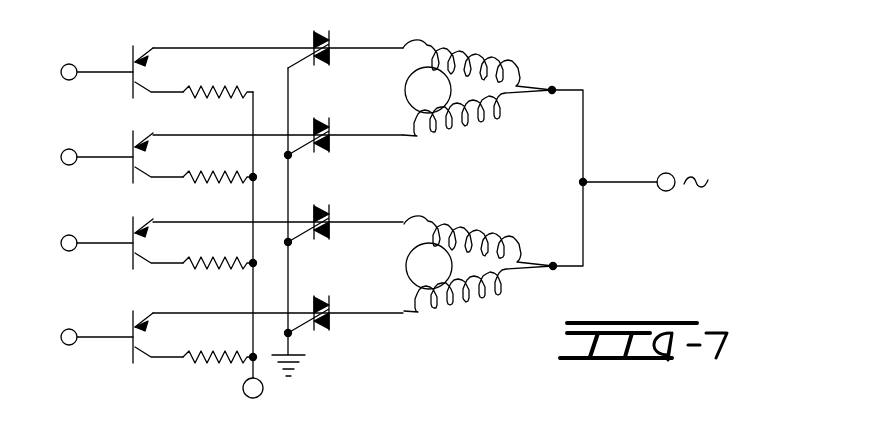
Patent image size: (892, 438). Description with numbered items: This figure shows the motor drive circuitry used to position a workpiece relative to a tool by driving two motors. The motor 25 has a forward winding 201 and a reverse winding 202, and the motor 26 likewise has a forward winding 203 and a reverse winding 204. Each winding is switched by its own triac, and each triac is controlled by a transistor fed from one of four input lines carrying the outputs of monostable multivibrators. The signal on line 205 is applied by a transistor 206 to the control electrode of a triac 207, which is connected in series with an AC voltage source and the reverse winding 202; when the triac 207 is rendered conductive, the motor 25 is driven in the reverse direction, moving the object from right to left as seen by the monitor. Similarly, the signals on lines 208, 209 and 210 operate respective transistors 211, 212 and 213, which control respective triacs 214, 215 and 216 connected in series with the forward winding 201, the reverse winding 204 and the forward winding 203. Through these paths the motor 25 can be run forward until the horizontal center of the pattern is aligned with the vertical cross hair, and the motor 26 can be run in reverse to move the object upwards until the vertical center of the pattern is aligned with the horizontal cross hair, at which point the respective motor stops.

The motor 25 is at (405, 84).
The motor 26 is at (406, 266).
The forward winding 201 is at (497, 120).
The reverse winding 202 is at (488, 66).
The forward winding 203 is at (473, 303).
The reverse winding 204 is at (517, 243).
The line 205 is at (85, 77).
The transistor 206 is at (135, 72).
The triac 207 is at (330, 43).
The line 208 is at (85, 162).
The line 209 is at (85, 248).
The line 210 is at (85, 342).
The transistor 211 is at (135, 157).
The transistor 212 is at (135, 243).
The transistor 213 is at (135, 337).
The triac 214 is at (330, 131).
The triac 215 is at (330, 219).
The triac 216 is at (330, 312).